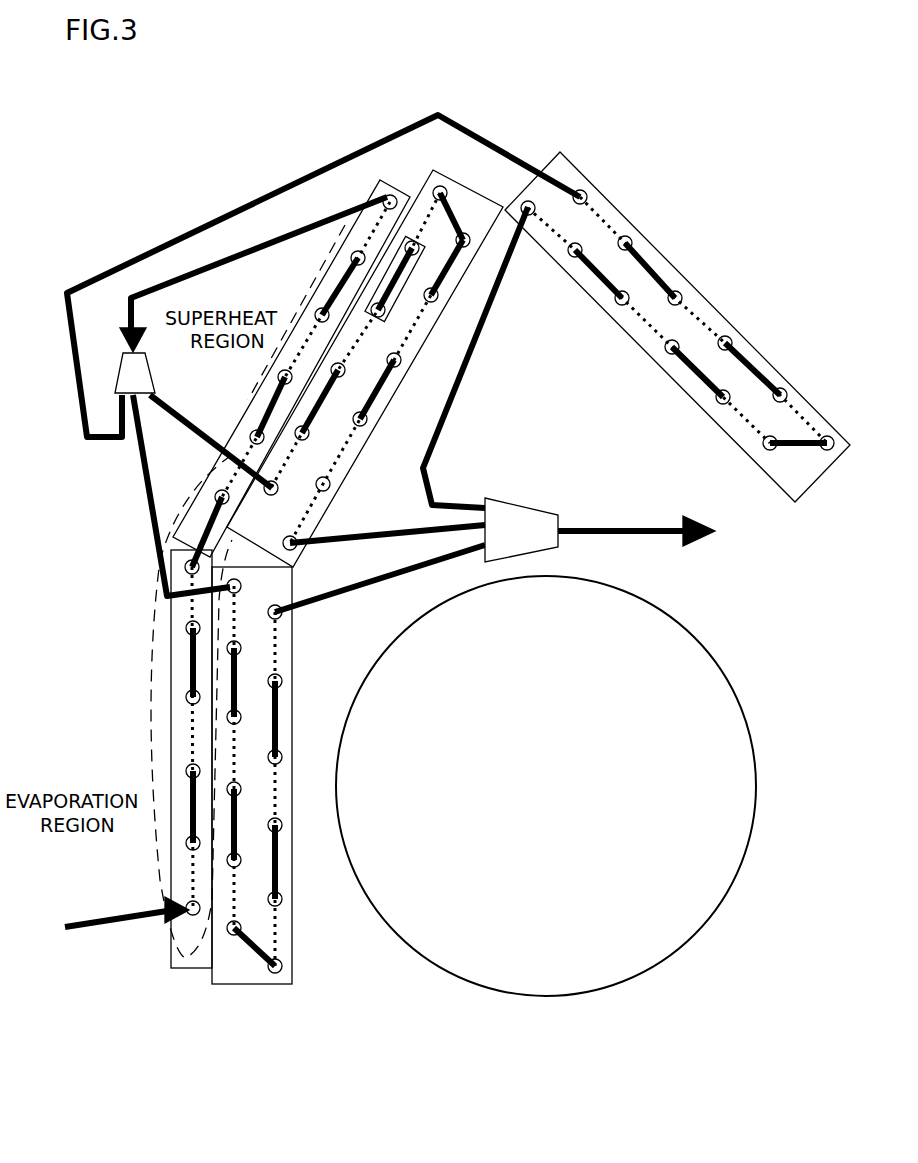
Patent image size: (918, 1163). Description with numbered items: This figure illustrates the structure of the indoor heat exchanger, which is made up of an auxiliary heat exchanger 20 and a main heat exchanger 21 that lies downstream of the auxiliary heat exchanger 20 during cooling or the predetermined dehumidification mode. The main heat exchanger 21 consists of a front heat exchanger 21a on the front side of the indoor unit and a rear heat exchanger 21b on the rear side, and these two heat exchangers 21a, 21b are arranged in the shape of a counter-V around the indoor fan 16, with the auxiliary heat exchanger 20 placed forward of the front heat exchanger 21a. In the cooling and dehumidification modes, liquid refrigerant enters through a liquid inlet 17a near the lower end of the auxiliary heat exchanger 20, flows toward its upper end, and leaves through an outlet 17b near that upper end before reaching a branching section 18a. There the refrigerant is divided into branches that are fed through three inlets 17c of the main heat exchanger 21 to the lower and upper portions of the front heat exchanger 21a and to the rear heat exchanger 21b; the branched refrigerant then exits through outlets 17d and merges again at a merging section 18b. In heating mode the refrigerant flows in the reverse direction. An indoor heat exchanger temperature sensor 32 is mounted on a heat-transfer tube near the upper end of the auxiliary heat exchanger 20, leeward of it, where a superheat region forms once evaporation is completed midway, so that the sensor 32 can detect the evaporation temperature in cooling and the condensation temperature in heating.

The indoor fan 16 is at (672, 664).
The liquid inlet 17a is at (193, 915).
The outlet 17b is at (382, 182).
The inlets 17c is at (586, 192).
The outlets 17d is at (527, 200).
The branching section 18a is at (147, 370).
The merging section 18b is at (548, 525).
The auxiliary heat exchanger 20 is at (170, 722).
The main heat exchanger 21 is at (538, 359).
The front heat exchanger 21a is at (373, 368).
The rear heat exchanger 21b is at (677, 327).
The indoor heat exchanger temperature sensor 32 is at (375, 300).